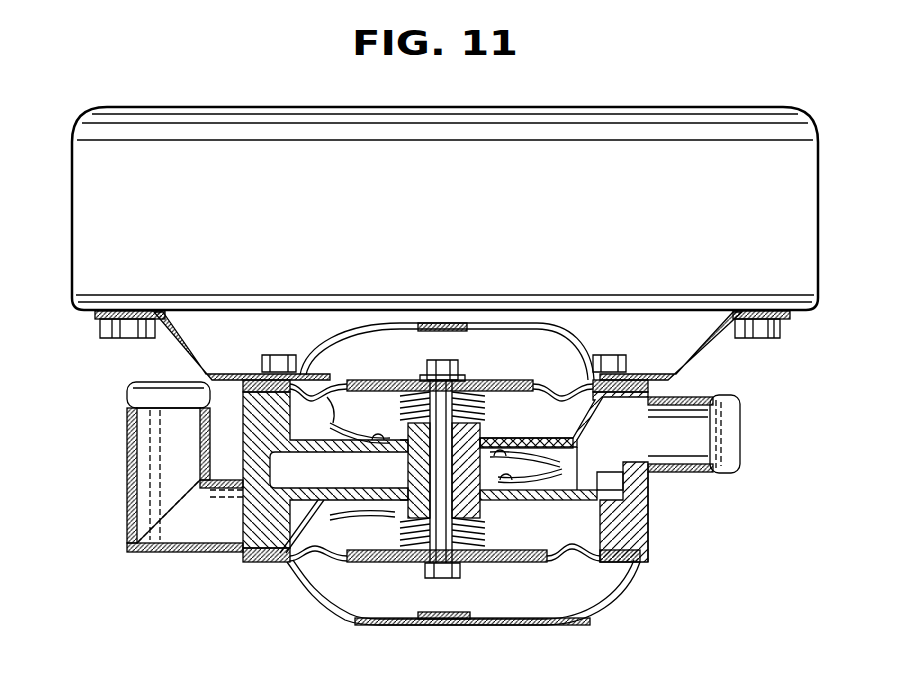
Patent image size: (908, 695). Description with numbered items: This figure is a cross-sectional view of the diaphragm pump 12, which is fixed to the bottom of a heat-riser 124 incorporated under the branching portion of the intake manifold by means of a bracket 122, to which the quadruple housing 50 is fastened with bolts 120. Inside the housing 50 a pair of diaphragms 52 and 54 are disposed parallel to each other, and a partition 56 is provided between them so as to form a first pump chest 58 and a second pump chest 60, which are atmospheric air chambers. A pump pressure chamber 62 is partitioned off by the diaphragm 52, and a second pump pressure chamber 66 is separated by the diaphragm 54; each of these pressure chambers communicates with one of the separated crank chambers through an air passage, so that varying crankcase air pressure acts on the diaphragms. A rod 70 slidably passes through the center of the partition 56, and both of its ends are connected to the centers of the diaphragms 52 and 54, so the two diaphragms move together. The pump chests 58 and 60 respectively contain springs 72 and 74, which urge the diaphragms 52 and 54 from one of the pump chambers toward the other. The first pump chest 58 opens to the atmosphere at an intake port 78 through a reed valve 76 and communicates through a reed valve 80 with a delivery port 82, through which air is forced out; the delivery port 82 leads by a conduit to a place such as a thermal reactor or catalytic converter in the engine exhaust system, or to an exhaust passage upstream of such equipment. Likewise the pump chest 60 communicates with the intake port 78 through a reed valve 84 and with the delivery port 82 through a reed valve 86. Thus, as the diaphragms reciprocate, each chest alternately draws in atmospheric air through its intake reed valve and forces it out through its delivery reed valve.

The diaphragm pump 12 is at (572, 612).
The housing 50 is at (240, 393).
The diaphragm 52 is at (535, 388).
The diaphragm 54 is at (578, 553).
The partition 56 is at (505, 440).
The first pump chest 58 is at (376, 429).
The second pump chest 60 is at (394, 542).
The pump pressure chamber 62 is at (417, 364).
The second pump pressure chamber 66 is at (396, 609).
The rod 70 is at (446, 383).
The spring 72 is at (490, 398).
The spring 74 is at (488, 543).
The reed valve 76 is at (330, 397).
The intake port 78 is at (178, 552).
The reed valve 80 is at (597, 432).
The delivery port 82 is at (733, 393).
The reed valve 84 is at (325, 516).
The reed valve 86 is at (570, 476).
The bolts 120 is at (277, 355).
The bracket 122 is at (190, 342).
The heat-riser 124 is at (808, 204).